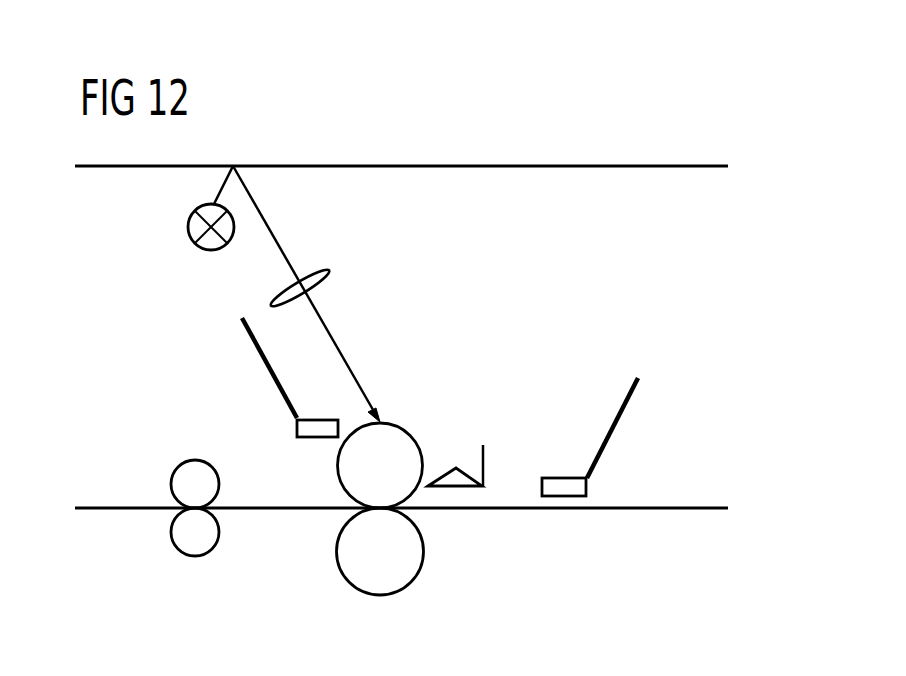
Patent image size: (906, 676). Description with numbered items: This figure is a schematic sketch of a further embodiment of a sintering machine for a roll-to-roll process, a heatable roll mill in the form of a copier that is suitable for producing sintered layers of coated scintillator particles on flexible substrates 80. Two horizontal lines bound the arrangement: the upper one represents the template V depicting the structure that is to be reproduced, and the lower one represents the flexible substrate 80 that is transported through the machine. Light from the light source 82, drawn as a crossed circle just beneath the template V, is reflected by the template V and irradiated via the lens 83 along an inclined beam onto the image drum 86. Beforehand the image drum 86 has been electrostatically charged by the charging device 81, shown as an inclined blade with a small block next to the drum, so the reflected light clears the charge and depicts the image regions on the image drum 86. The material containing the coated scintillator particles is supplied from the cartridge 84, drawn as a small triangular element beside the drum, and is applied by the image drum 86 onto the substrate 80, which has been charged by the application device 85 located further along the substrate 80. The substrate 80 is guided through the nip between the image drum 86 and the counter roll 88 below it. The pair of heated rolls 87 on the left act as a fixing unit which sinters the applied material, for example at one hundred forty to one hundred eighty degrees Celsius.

The template V is at (595, 166).
The flexible substrate 80 is at (672, 510).
The charging device 81 is at (262, 358).
The light source 82 is at (188, 227).
The lens 83 is at (332, 268).
The cartridge 84 is at (485, 458).
The application device 85 is at (620, 422).
The image drum 86 is at (337, 467).
The heated rolls 87 is at (193, 558).
The counter roll 88 is at (337, 553).